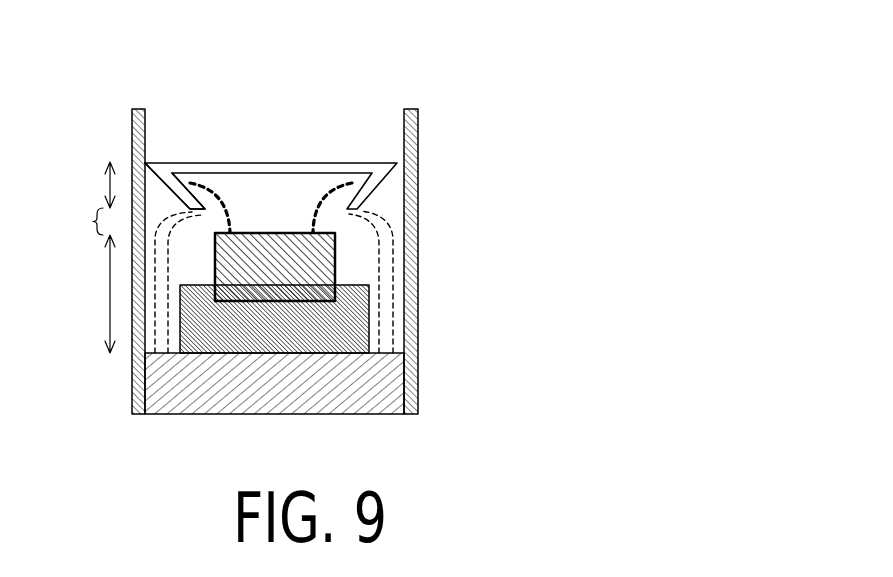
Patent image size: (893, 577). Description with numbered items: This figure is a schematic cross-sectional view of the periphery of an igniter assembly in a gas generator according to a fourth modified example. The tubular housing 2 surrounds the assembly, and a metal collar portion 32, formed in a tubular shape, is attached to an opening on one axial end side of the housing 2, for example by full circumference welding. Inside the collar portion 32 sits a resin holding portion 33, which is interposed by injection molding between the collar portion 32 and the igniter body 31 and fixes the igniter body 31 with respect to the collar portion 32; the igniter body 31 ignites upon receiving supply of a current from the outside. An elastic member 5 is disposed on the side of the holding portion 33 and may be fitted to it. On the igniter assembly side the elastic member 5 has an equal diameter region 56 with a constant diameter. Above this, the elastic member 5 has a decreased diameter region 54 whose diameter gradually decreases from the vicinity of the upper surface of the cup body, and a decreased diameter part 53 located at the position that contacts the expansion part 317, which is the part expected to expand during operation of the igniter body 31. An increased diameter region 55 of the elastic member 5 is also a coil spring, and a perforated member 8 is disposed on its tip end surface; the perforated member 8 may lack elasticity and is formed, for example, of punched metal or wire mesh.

The housing 2 is at (418, 120).
The elastic member 5 is at (377, 220).
The perforated member 8 is at (345, 127).
The igniter body 31 is at (337, 259).
The collar portion 32 is at (333, 387).
The holding portion 33 is at (330, 330).
The decreased diameter part 53 is at (190, 209).
The decreased diameter region 54 is at (75, 222).
The increased diameter region 55 is at (81, 185).
The equal diameter region 56 is at (81, 294).
The expansion part 317 is at (315, 225).